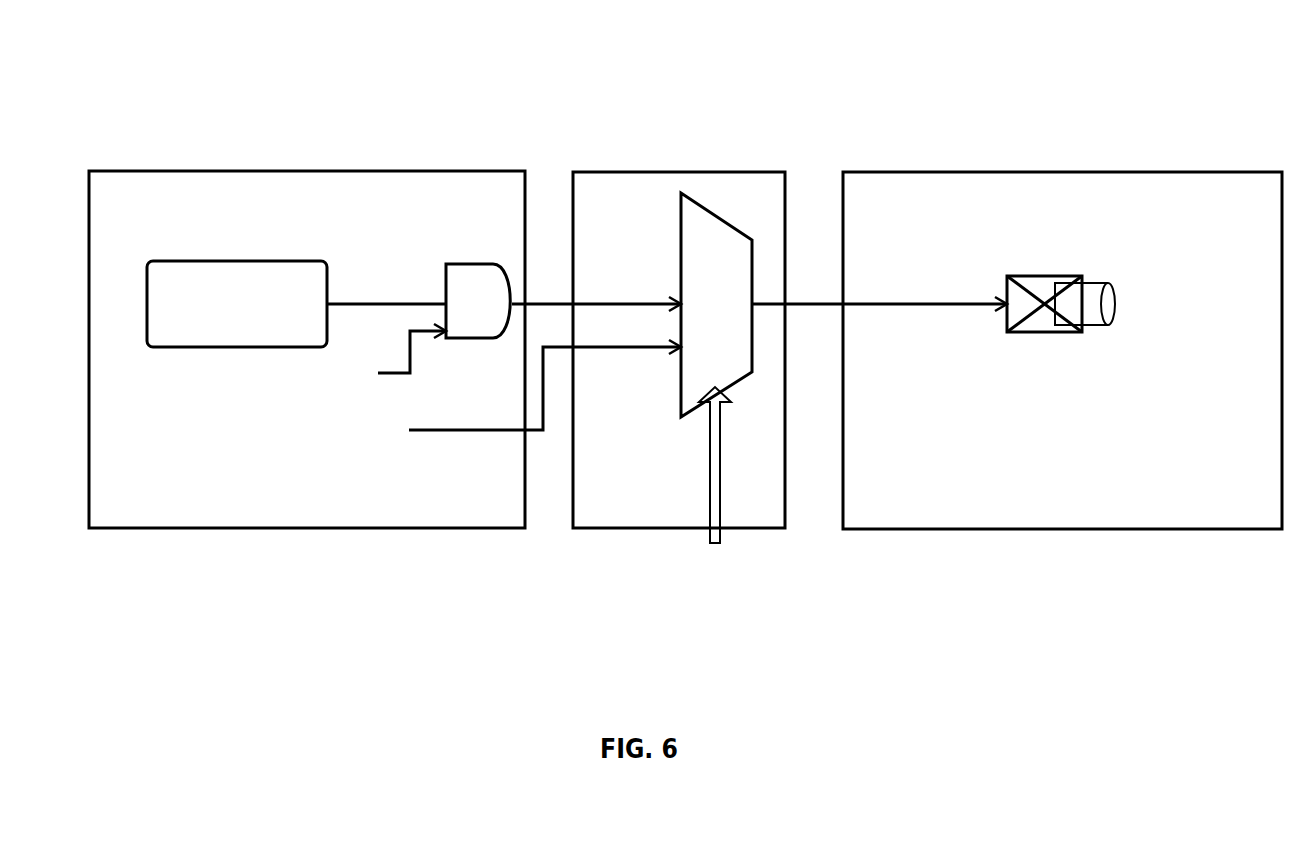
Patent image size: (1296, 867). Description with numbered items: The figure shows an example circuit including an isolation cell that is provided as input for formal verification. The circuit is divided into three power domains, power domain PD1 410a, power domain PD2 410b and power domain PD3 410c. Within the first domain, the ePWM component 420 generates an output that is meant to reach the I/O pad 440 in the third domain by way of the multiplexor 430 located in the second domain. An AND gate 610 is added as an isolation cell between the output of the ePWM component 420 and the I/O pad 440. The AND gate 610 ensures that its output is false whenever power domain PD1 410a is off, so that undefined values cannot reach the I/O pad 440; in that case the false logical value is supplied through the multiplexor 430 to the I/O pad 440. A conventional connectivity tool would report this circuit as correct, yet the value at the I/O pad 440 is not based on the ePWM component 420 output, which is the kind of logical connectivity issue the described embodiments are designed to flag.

The power domain PD1 410a is at (307, 171).
The power domain PD2 410b is at (697, 171).
The power domain PD3 410c is at (1015, 171).
The ePWM component 420 is at (213, 348).
The multiplexor 430 is at (742, 382).
The I/O pad 440 is at (1052, 333).
The AND gate 610 is at (472, 264).